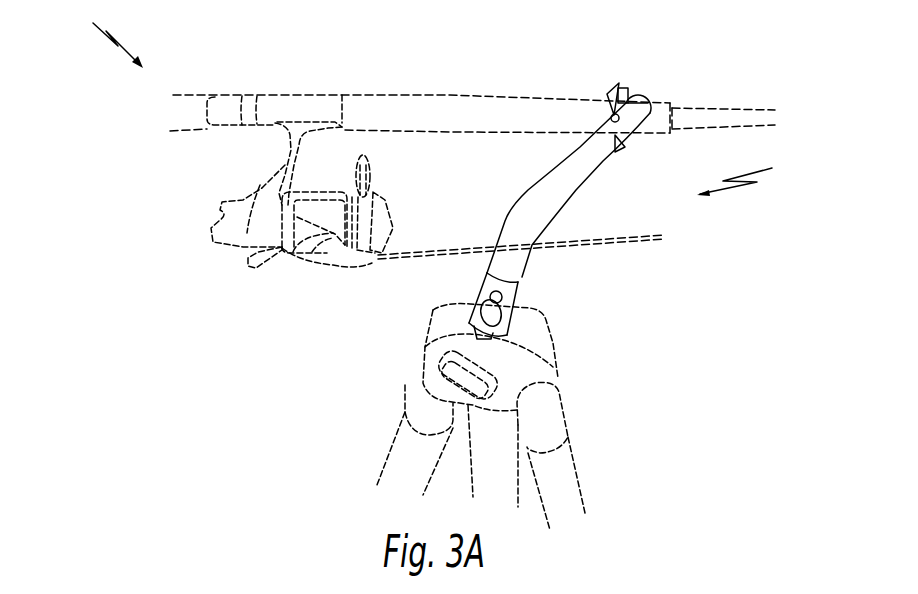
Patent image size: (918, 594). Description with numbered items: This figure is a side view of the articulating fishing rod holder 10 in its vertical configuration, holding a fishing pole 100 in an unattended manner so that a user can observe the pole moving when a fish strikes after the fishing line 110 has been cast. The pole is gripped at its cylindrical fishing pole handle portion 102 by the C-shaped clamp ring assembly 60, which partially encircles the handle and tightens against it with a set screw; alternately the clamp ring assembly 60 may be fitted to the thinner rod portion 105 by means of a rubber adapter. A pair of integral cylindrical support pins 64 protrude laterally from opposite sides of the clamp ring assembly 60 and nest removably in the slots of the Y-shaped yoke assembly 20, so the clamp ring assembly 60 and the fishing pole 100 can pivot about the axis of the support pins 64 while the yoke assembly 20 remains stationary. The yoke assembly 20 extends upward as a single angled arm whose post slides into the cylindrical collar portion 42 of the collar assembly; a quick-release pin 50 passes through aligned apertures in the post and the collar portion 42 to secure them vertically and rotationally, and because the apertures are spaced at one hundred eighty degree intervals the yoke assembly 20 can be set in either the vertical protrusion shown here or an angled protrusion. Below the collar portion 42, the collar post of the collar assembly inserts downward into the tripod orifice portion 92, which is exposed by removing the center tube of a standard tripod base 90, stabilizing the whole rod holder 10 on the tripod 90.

The fishing pole 100 is at (102, 37).
The fishing pole handle portion 102 is at (388, 93).
The rod portion 105 is at (727, 107).
The fishing line 110 is at (647, 242).
The articulating fishing rod holder 10 is at (747, 177).
The yoke assembly 20 is at (527, 190).
The clamp ring assembly 60 is at (622, 84).
The support pins 64 is at (612, 115).
The quick-release pin 50 is at (503, 297).
The collar portion 42 is at (516, 299).
The tripod orifice portion 92 is at (475, 330).
The tripod base 90 is at (567, 450).